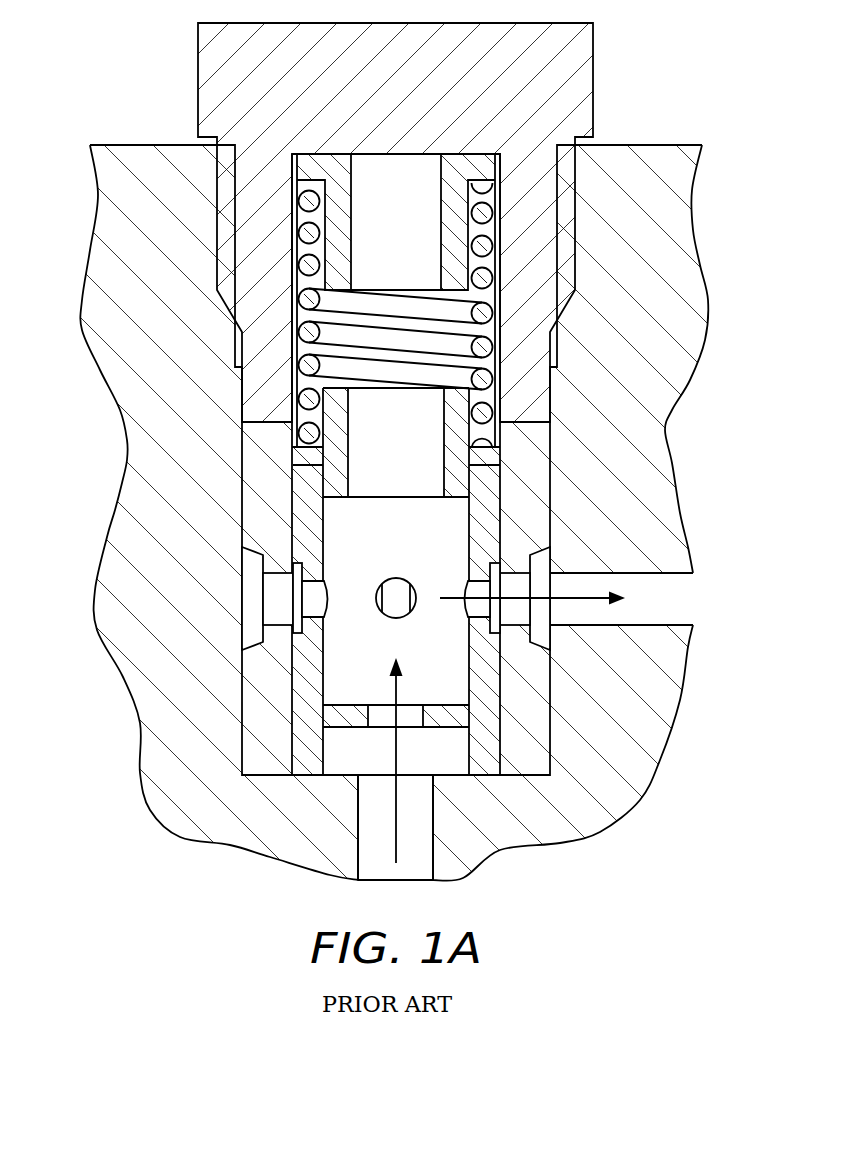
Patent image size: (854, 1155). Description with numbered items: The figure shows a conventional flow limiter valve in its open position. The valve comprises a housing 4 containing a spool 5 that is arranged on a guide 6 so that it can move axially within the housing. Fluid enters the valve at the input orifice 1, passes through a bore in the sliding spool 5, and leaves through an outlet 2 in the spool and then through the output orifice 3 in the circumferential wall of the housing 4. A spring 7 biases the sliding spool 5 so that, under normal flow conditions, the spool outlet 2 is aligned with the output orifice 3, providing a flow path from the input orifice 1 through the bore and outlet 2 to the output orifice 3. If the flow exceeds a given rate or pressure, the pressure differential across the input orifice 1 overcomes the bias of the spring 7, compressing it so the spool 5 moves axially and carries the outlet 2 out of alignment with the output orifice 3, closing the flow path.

The input orifice 1 is at (378, 738).
The outlet 2 is at (492, 585).
The output orifice 3 is at (550, 573).
The housing 4 is at (263, 153).
The spool 5 is at (360, 538).
The guide 6 is at (483, 728).
The spring 7 is at (485, 282).